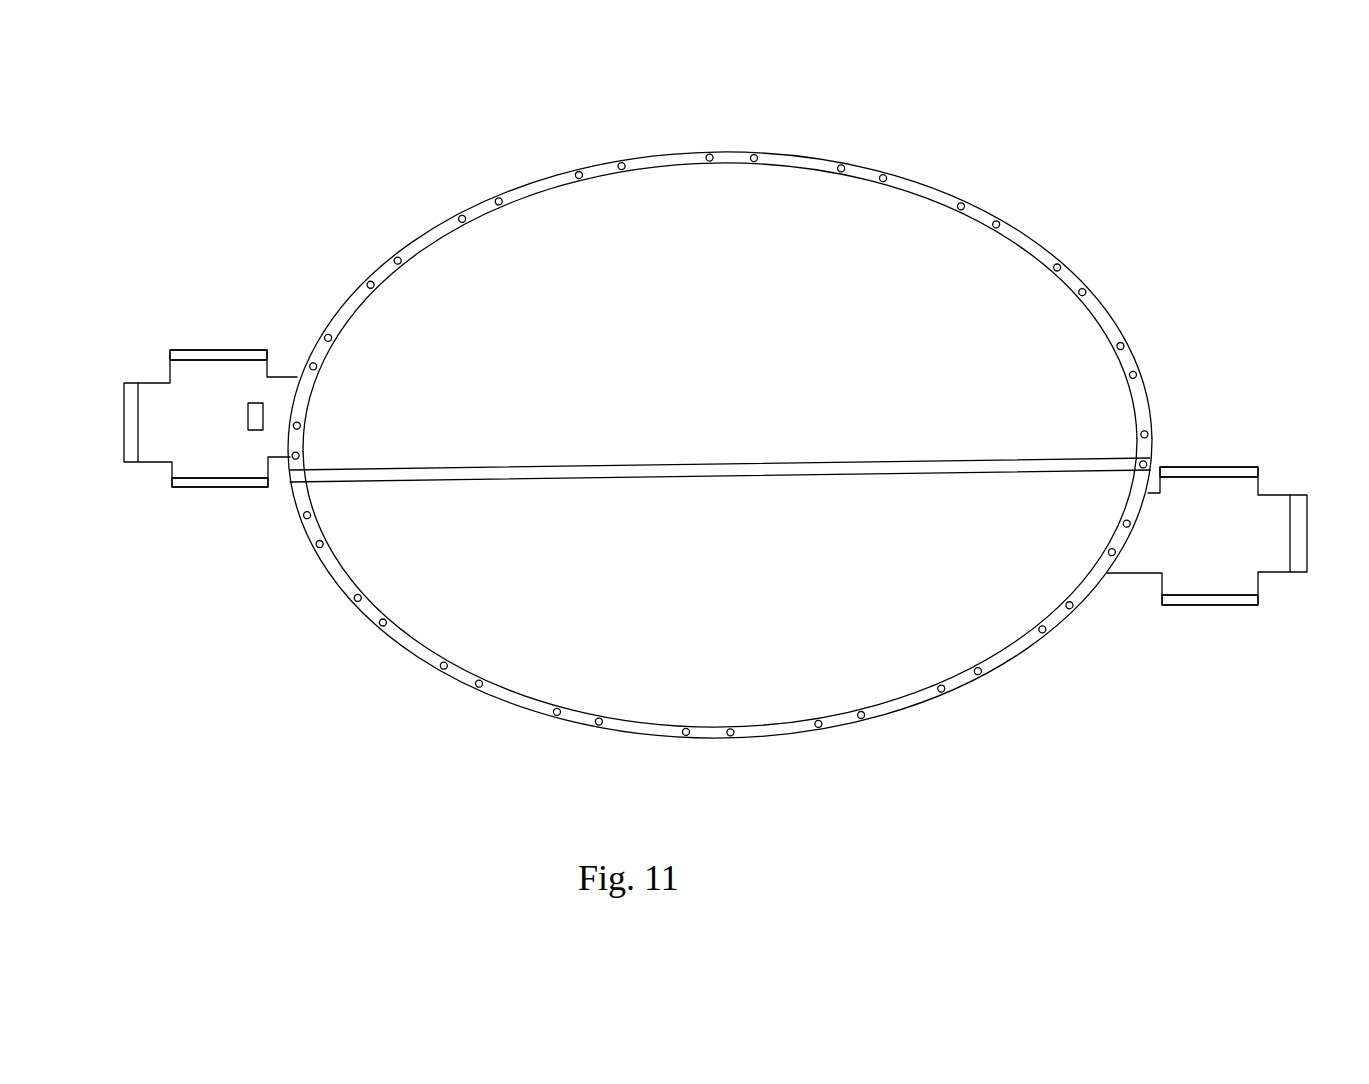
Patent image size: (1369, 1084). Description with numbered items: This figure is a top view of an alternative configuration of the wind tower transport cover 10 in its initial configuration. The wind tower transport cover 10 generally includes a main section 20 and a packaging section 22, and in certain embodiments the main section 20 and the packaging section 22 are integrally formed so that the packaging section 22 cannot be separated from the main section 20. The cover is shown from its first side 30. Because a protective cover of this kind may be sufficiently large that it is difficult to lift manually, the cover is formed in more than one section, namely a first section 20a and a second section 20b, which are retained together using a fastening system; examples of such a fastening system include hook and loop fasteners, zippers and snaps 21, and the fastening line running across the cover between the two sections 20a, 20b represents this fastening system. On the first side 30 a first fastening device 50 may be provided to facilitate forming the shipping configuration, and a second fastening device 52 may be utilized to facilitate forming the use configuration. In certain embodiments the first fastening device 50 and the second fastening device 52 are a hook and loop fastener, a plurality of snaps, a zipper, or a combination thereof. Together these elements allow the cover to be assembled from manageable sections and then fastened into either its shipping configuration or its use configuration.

The wind tower transport cover 10 is at (928, 778).
The main section 20 is at (720, 467).
The first cover section 20a is at (753, 700).
The second cover section 20b is at (545, 215).
The snaps 21 is at (677, 468).
The packaging section 22 is at (188, 453).
The first side 30 is at (1007, 578).
The first fastening device 50 is at (128, 385).
The second fastening device 52 is at (250, 403).